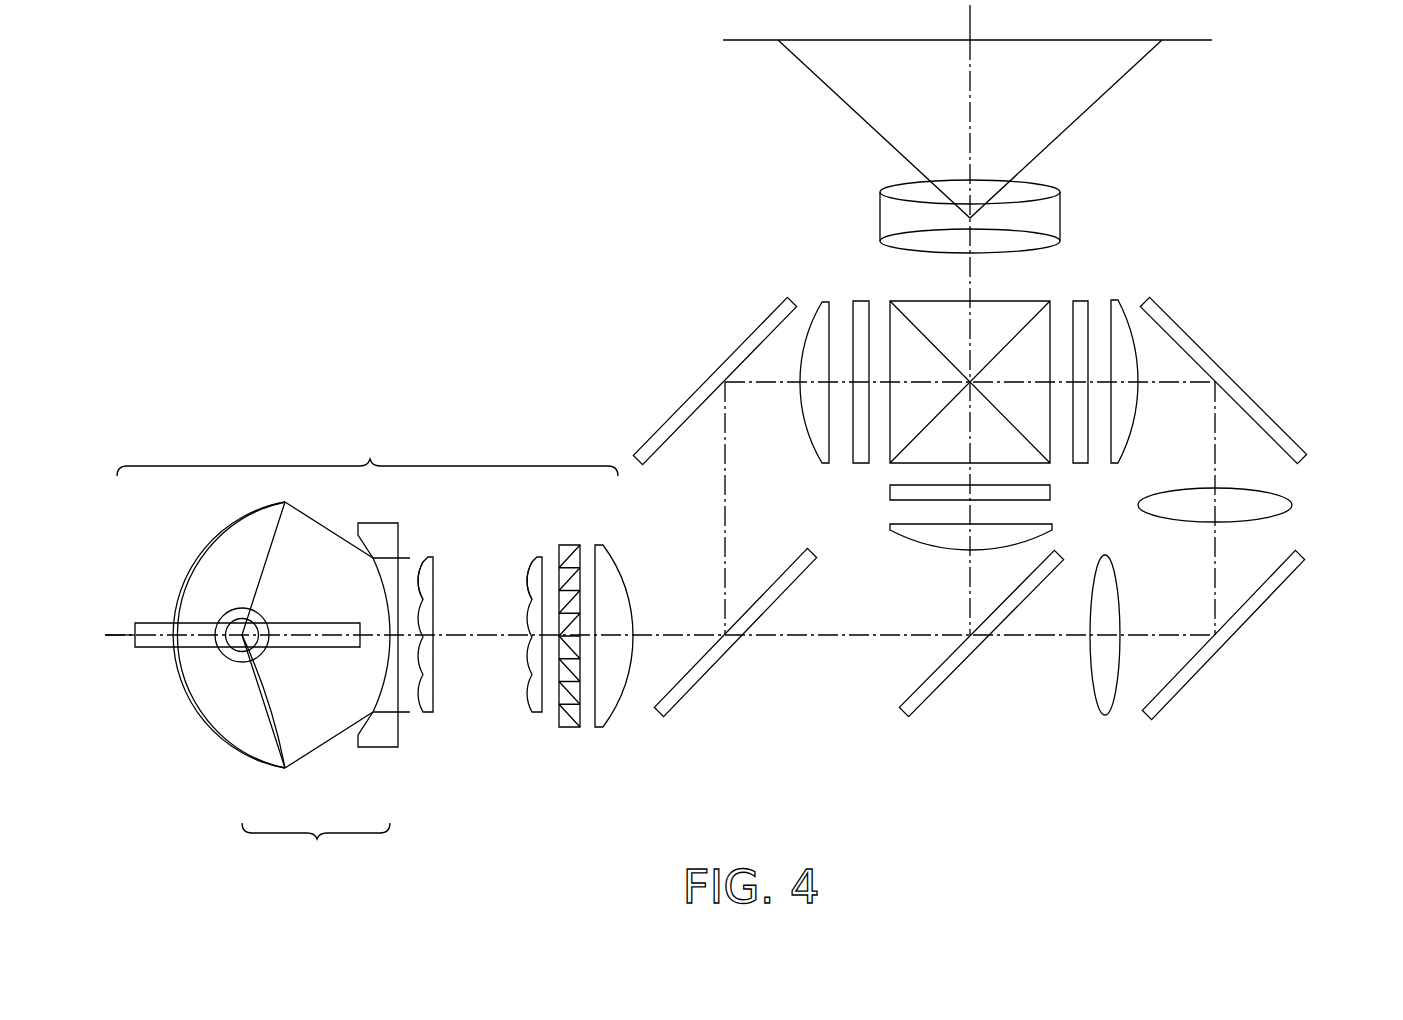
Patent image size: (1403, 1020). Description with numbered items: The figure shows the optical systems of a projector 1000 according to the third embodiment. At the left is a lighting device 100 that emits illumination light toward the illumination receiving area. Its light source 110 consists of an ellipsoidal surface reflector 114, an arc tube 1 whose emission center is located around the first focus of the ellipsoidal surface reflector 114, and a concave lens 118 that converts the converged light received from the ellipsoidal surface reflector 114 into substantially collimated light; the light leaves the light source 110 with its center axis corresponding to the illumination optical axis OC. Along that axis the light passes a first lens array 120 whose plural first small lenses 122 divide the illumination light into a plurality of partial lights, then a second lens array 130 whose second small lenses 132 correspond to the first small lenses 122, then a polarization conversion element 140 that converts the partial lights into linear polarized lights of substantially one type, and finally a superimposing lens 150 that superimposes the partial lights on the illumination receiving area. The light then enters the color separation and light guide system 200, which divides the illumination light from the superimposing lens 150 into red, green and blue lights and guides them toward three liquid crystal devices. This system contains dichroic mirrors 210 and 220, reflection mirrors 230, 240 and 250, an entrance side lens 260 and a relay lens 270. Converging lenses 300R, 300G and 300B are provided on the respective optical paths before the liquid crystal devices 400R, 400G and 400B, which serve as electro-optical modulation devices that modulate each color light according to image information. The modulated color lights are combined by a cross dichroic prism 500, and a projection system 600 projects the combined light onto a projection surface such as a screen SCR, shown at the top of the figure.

The projector 1000 is at (407, 306).
The lighting device 100 is at (367, 453).
The light source 110 is at (316, 846).
The ellipsoidal surface reflector 114 is at (252, 762).
The arc tube 1 is at (282, 750).
The concave lens 118 is at (377, 752).
The illumination optical axis OC is at (118, 637).
The first lens array 120 is at (430, 712).
The first small lenses 122 is at (423, 558).
The second lens array 130 is at (538, 713).
The second small lenses 132 is at (528, 558).
The polarization conversion element 140 is at (568, 727).
The superimposing lens 150 is at (603, 727).
The color separation and light guide system 200 is at (992, 798).
The dichroic mirror 210 is at (707, 673).
The dichroic mirror 220 is at (952, 678).
The reflection mirror 230 is at (704, 385).
The reflection mirror 240 is at (1195, 673).
The reflection mirror 250 is at (1198, 343).
The entrance side lens 260 is at (1105, 712).
The relay lens 270 is at (1295, 508).
The converging lens 300R is at (825, 300).
The converging lens 300G is at (890, 527).
The converging lens 300B is at (1113, 300).
The liquid crystal device 400R is at (862, 300).
The liquid crystal device 400G is at (890, 490).
The liquid crystal device 400B is at (1080, 300).
The cross dichroic prism 500 is at (905, 300).
The projection system 600 is at (1063, 212).
The screen SCR is at (1188, 40).